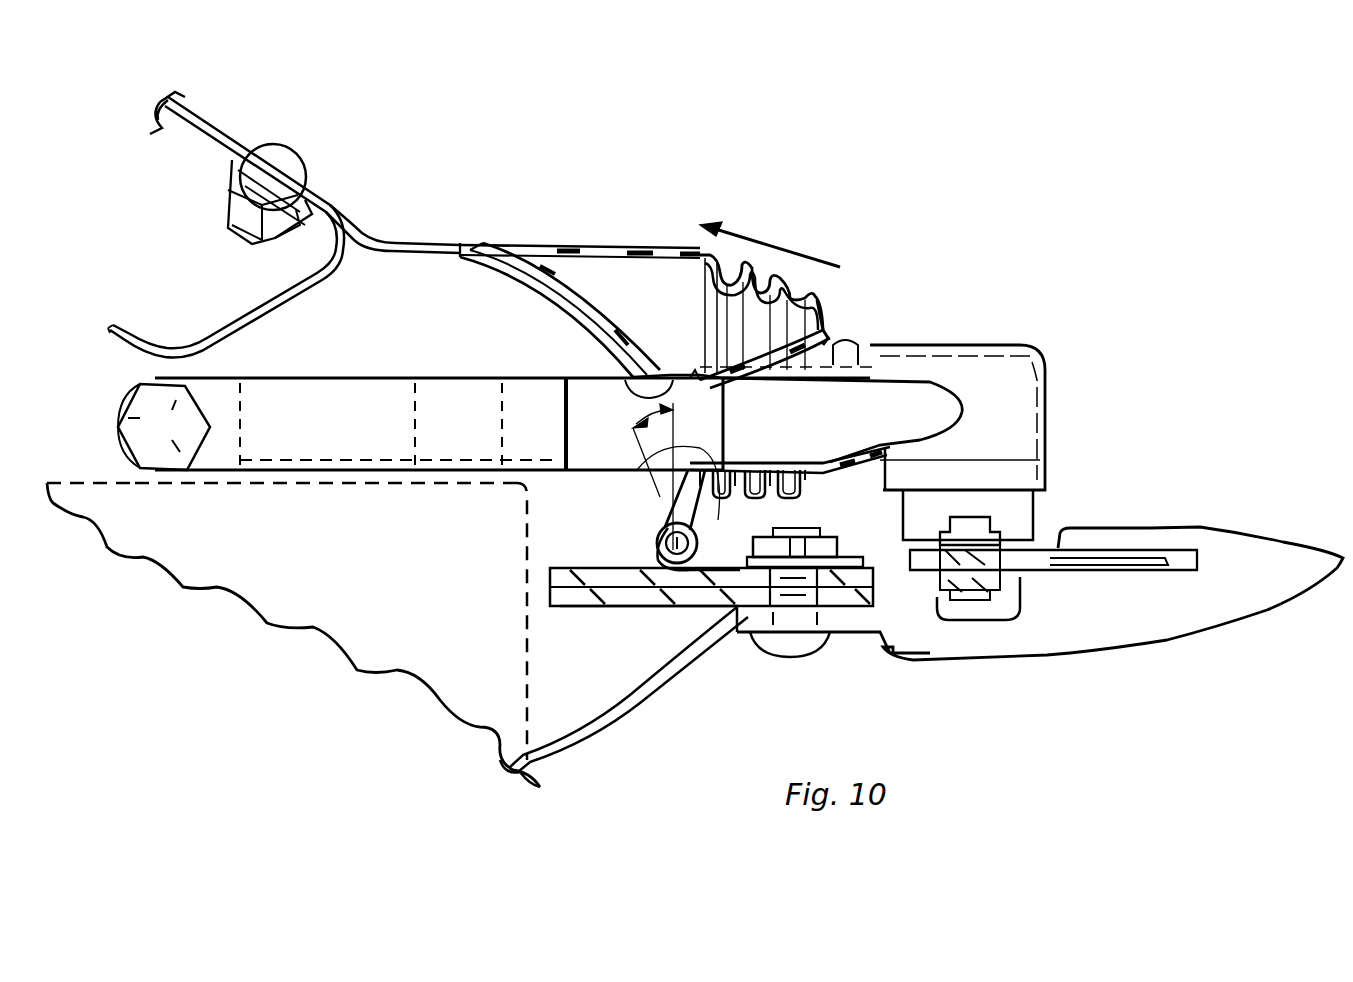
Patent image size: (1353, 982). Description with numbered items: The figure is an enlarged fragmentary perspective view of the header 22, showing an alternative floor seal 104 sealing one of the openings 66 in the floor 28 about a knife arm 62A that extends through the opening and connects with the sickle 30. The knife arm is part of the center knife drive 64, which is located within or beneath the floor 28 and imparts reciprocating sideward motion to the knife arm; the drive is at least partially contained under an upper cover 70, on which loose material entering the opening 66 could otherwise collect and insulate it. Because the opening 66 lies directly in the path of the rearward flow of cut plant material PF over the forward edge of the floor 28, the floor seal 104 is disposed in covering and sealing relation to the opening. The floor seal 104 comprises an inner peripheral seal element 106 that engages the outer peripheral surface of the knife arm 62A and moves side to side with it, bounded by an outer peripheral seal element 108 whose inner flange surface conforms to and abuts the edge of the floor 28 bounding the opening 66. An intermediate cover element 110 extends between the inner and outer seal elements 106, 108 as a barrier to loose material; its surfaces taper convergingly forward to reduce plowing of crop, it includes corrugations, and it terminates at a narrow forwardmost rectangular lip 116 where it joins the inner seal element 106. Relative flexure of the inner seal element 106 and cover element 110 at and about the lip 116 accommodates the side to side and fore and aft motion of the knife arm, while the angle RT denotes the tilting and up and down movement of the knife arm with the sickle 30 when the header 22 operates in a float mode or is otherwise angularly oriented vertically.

The header 22 is at (509, 128).
The floor 28 is at (446, 243).
The sickle 30 is at (1248, 530).
The first knife arm 62A is at (1024, 342).
The center knife drive 64 is at (530, 693).
The opening 66 is at (660, 373).
The upper cover 70 is at (448, 477).
The floor seal 104 is at (728, 252).
The inner peripheral seal element 106 is at (640, 387).
The outer peripheral seal element 108 is at (512, 246).
The intermediate cover element 110 is at (750, 270).
The forwardmost rectangular lip 116 is at (825, 318).
The flow of cut plant material PF is at (735, 240).
The angle of tilting RT is at (640, 405).